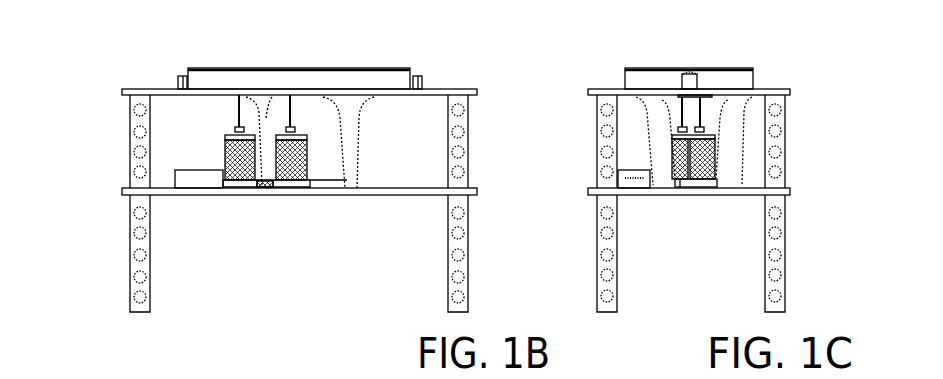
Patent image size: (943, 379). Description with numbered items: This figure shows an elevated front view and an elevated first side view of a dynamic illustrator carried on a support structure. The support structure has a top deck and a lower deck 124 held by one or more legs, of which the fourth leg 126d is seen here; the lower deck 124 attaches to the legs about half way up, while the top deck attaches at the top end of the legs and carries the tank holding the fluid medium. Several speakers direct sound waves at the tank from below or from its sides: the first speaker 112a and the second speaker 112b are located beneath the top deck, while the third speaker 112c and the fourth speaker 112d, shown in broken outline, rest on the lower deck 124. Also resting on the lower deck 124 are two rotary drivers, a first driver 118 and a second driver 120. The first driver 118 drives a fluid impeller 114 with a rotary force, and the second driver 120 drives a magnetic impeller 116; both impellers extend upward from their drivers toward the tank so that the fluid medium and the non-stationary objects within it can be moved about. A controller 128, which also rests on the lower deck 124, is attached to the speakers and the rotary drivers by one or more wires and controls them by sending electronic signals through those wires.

In FIG. 1B, the first speaker 112a is at (180, 78).
In FIG. 1B, the second speaker 112b is at (422, 77).
In FIG. 1B, the third speaker 112c is at (252, 98).
In FIG. 1C, the third speaker 112c is at (724, 125).
In FIG. 1C, the fourth speaker 112d is at (658, 105).
In FIG. 1B, the fluid impeller 114 is at (240, 125).
In FIG. 1B, the magnetic impeller 116 is at (290, 97).
In FIG. 1B, the first driver 118 is at (250, 165).
In FIG. 1B, the second driver 120 is at (298, 165).
In FIG. 1B, the lower deck 124 is at (410, 195).
In FIG. 1C, the fourth leg 126d is at (773, 270).
In FIG. 1B, the controller 128 is at (175, 178).